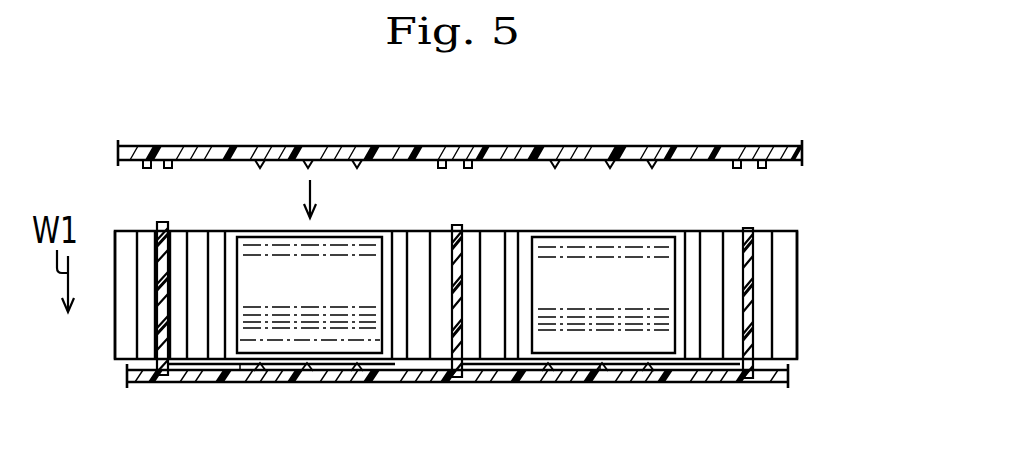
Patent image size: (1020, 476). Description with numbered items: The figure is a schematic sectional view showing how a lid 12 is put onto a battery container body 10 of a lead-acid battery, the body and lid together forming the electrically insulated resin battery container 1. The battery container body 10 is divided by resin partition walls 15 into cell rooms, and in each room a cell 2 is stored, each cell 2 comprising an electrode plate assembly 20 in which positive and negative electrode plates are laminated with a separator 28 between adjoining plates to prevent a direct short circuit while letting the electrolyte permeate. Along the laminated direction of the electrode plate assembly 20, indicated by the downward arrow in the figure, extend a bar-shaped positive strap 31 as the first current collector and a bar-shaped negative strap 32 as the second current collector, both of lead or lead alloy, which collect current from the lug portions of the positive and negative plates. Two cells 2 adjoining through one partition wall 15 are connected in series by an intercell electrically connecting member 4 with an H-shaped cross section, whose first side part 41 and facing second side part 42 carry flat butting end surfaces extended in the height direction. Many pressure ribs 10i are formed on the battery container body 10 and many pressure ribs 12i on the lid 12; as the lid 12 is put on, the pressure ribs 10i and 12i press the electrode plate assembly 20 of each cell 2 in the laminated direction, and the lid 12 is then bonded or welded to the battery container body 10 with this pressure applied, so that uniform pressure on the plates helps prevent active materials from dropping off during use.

The battery container 1 is at (513, 377).
The cell 2 is at (272, 318).
The intercell electrically connecting member 4 is at (172, 234).
The battery container body 10 is at (682, 380).
The pressure rib 10i is at (365, 366).
The lid 12 is at (670, 158).
The pressure rib 12i is at (360, 166).
The partition wall 15 is at (162, 292).
The electrode plate assembly 20 is at (295, 318).
The separator 28 is at (682, 248).
The positive strap 31 is at (200, 243).
The negative strap 32 is at (125, 245).
The first side part 41 is at (770, 267).
The second side part 42 is at (728, 250).